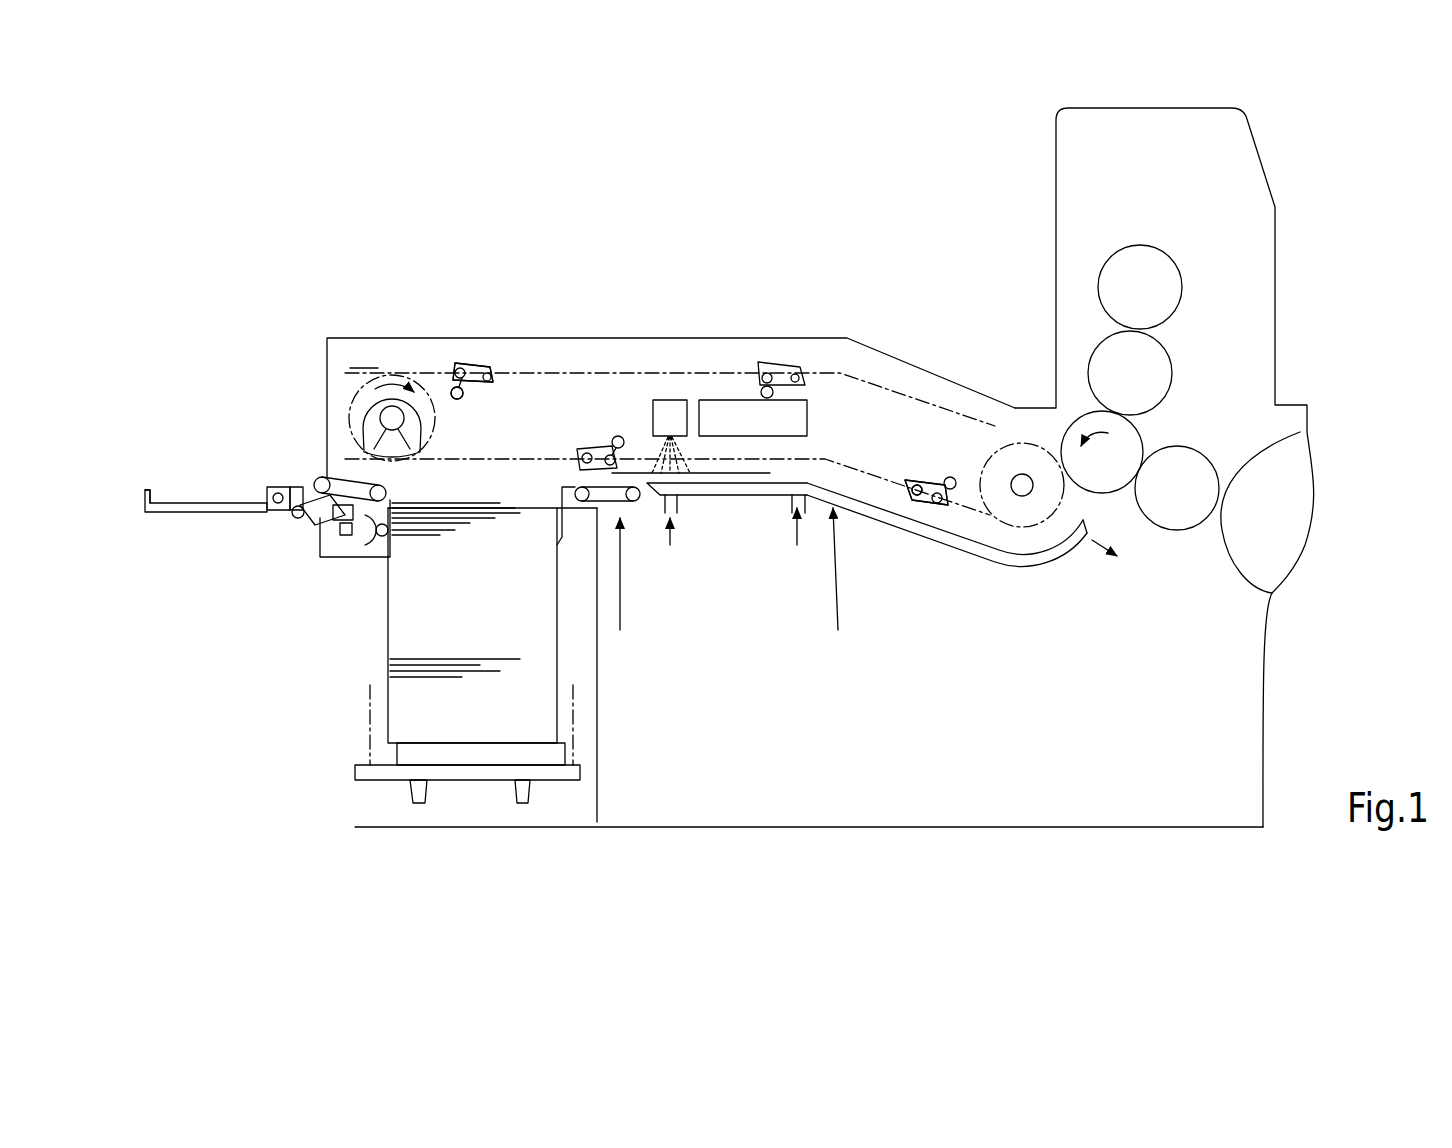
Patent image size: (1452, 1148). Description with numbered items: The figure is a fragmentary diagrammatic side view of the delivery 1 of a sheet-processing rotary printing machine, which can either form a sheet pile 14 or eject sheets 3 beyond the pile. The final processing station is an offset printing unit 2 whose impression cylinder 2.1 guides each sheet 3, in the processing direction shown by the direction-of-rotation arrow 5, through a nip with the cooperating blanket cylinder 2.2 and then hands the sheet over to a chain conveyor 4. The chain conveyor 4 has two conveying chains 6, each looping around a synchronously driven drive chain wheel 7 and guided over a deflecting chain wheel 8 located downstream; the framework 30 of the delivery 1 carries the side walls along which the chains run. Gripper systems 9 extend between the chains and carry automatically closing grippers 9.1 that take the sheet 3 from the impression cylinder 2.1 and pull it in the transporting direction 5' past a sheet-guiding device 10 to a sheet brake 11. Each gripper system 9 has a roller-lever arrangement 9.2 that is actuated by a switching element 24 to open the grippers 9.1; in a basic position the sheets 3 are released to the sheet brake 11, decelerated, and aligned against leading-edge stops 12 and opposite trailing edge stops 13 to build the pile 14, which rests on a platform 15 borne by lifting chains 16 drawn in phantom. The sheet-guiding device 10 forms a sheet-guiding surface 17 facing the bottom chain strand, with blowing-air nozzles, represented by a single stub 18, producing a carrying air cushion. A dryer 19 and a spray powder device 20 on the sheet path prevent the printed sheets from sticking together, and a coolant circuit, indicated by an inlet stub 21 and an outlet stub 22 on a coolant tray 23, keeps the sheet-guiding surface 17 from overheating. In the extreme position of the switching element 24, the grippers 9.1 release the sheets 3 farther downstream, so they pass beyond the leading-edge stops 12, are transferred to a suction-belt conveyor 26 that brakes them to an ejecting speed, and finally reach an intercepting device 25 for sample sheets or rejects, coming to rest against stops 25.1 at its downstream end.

The delivery 1 is at (790, 300).
The offset printing unit 2 is at (1000, 208).
The impression cylinder 2.1 is at (1122, 433).
The blanket cylinder 2.2 is at (1157, 360).
The sheet 3 is at (677, 473).
The chain conveyor 4 is at (620, 358).
The direction-of-rotation arrow 5 is at (1103, 452).
The transporting direction 5' is at (503, 418).
The conveying chain 6 is at (664, 373).
The drive chain wheel 7 is at (1020, 452).
The deflecting chain wheel 8 is at (370, 398).
The gripper system 9 is at (583, 430).
The gripper 9.1 is at (912, 500).
The roller-lever arrangement 9.2 is at (467, 399).
The sheet-guiding device 10 is at (813, 593).
The sheet brake 11 is at (621, 665).
The leading-edge stop 12 is at (405, 502).
The trailing edge stop 13 is at (548, 493).
The sheet pile 14 is at (430, 638).
The platform 15 is at (372, 778).
The lifting chain 16 is at (370, 702).
The sheet-guiding surface 17 is at (815, 485).
The stub 18 is at (788, 500).
The dryer 19 is at (742, 415).
The spray powder device 20 is at (655, 418).
The inlet stub 21 is at (658, 508).
The outlet stub 22 is at (1092, 548).
The coolant tray 23 is at (970, 550).
The switching element 24 is at (427, 397).
The intercepting device 25 is at (198, 523).
The stop 25.1 is at (155, 497).
The suction-belt conveyor 26 is at (299, 461).
The framework 30 is at (363, 355).